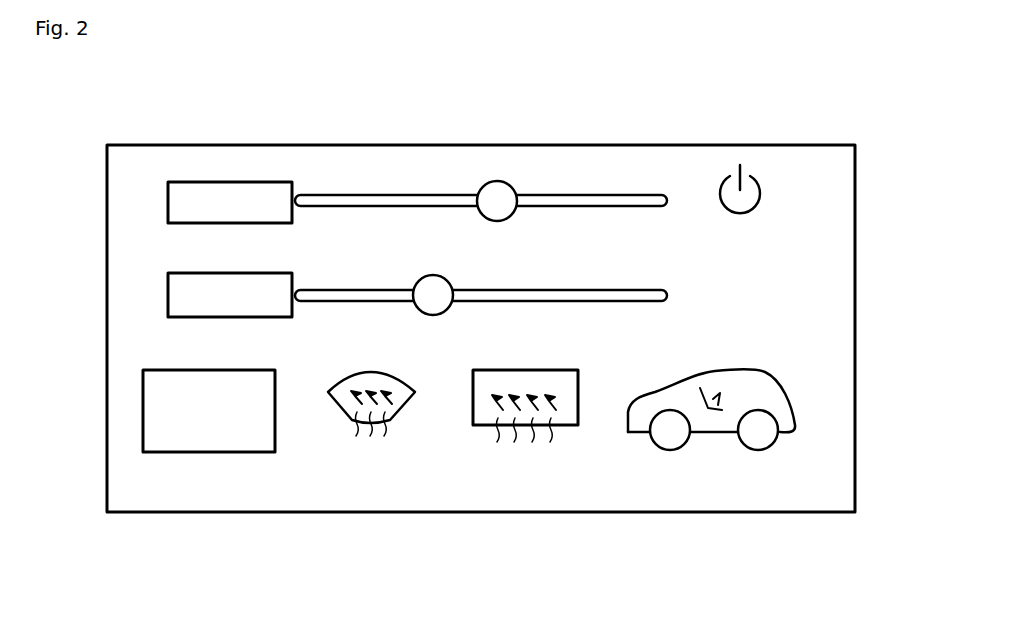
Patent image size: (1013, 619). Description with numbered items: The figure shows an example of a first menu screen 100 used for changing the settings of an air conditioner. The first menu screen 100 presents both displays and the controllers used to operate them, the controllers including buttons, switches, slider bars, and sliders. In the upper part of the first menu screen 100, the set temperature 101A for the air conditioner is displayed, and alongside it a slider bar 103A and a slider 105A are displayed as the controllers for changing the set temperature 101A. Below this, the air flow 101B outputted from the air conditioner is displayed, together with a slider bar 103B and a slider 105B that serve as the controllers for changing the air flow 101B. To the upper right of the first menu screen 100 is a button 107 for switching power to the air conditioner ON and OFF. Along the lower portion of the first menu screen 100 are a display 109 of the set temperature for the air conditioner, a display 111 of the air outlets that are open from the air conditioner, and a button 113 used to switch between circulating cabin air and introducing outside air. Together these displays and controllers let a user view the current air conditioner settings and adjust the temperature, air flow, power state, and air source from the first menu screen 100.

The first menu screen 100 is at (307, 145).
The set temperature 101A is at (168, 200).
The air flow 101B is at (168, 297).
The slider bar 103A is at (637, 193).
The slider bar 103B is at (667, 296).
The slider 105A is at (497, 181).
The slider 105B is at (427, 278).
The button for switching power ON and OFF 107 is at (755, 178).
The display of the set temperature 109 is at (200, 452).
The display of air outlets 111 is at (444, 472).
The button to switch between circulating cabin air and introducing outside air 113 is at (708, 460).